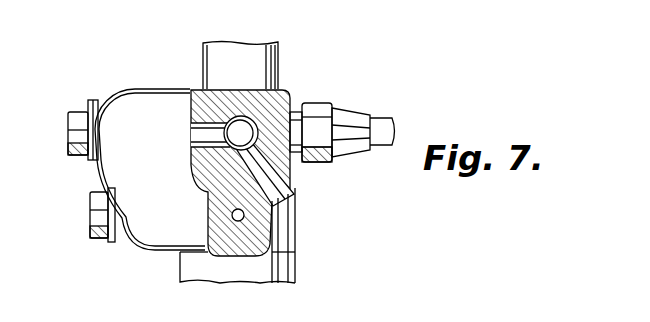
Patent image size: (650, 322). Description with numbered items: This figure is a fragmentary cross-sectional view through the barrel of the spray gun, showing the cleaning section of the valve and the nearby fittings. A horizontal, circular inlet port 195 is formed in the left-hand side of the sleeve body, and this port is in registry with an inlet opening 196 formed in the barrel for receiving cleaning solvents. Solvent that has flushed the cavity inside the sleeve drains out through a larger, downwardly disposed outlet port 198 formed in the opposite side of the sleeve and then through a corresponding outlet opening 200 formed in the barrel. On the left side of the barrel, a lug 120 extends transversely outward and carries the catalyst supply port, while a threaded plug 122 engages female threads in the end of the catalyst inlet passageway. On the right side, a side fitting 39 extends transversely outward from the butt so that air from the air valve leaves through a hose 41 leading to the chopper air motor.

The side fitting 39 is at (322, 163).
The hose 41 is at (384, 118).
The lug 120 is at (112, 152).
The threaded plug 122 is at (70, 122).
The inlet port 195 is at (201, 126).
The inlet opening 196 is at (199, 126).
The outlet port 198 is at (279, 101).
The outlet opening 200 is at (292, 194).